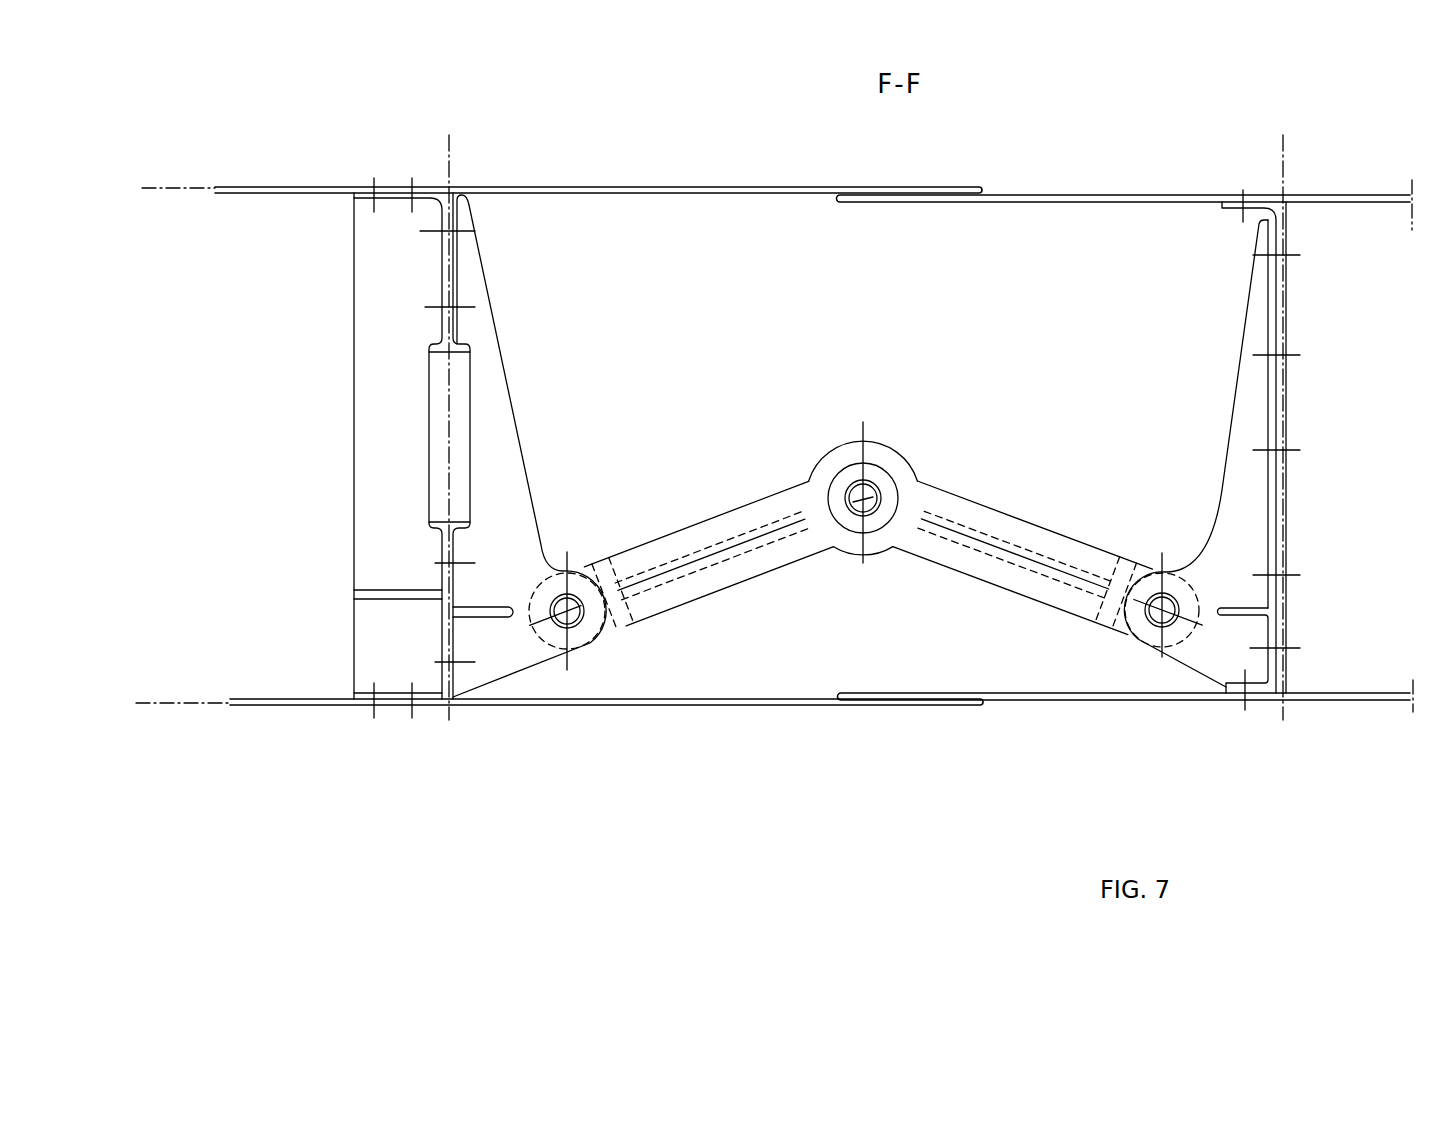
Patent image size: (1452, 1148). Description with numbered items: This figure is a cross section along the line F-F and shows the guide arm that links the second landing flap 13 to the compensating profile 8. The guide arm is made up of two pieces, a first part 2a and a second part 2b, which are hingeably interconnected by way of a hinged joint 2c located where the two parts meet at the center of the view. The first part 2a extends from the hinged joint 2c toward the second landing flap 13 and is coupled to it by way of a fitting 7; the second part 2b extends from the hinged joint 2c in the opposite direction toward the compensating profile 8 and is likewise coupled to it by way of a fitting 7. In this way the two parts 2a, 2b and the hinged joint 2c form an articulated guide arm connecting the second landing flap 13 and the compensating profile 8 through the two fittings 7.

The second landing flap 13 is at (244, 440).
The compensating profile 8 is at (1378, 450).
The fitting 7 is at (489, 737).
The first part 2a is at (716, 585).
The second part 2b is at (1008, 585).
The hinged joint 2c is at (867, 596).